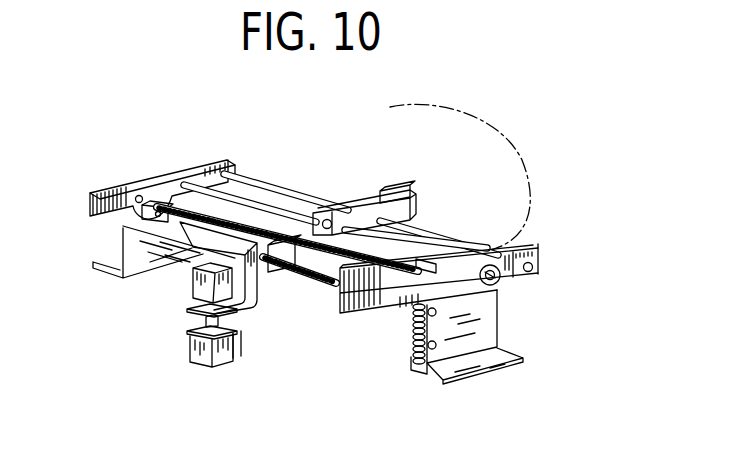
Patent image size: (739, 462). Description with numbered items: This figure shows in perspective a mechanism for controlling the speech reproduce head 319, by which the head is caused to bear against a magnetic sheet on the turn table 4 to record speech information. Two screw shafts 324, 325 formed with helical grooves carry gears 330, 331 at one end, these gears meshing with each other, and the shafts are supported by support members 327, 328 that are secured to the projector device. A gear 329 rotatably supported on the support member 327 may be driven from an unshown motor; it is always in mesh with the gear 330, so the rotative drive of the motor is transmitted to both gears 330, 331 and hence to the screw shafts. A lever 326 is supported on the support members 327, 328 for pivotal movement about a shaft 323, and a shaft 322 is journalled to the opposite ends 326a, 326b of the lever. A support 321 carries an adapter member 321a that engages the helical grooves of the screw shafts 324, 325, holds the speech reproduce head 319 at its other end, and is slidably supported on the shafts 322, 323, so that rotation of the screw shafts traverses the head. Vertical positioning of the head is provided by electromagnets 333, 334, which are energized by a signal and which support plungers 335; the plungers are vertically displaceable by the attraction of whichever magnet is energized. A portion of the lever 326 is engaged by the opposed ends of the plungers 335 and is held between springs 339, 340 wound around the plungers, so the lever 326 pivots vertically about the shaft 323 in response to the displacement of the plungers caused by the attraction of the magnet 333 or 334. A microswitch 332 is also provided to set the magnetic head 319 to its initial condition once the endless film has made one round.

The turn table 4 is at (516, 180).
The speech reproduce head 319 is at (407, 190).
The support 321 is at (365, 224).
The adapter member 321a is at (276, 268).
The shaft 322 is at (247, 180).
The shaft 323 is at (287, 216).
The screw shaft 324 is at (151, 200).
The screw shaft 325 is at (320, 287).
The lever 326 is at (384, 307).
The end of lever 326a is at (537, 272).
The end of lever 326b is at (227, 160).
The support member 327 is at (467, 363).
The support member 328 is at (130, 258).
The gear 329 is at (418, 364).
The gear 330 is at (417, 320).
The gear 331 is at (427, 264).
The microswitch 332 is at (140, 200).
The electromagnet 333 is at (218, 362).
The electromagnet 334 is at (200, 285).
The plunger 335 is at (193, 317).
The spring 339 is at (230, 343).
The spring 340 is at (325, 300).